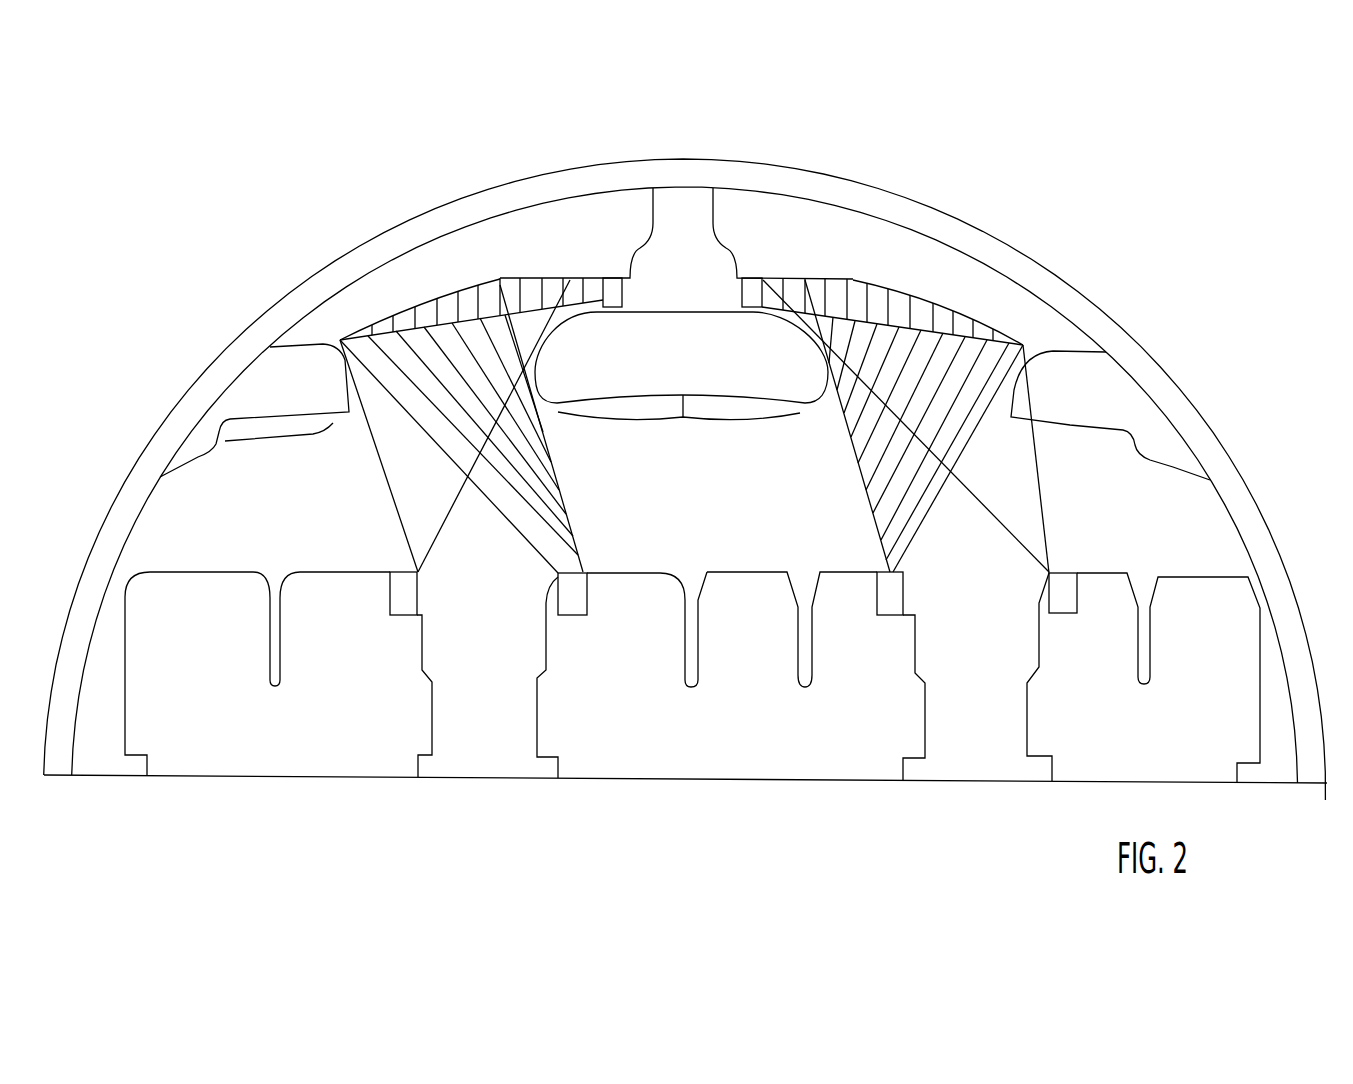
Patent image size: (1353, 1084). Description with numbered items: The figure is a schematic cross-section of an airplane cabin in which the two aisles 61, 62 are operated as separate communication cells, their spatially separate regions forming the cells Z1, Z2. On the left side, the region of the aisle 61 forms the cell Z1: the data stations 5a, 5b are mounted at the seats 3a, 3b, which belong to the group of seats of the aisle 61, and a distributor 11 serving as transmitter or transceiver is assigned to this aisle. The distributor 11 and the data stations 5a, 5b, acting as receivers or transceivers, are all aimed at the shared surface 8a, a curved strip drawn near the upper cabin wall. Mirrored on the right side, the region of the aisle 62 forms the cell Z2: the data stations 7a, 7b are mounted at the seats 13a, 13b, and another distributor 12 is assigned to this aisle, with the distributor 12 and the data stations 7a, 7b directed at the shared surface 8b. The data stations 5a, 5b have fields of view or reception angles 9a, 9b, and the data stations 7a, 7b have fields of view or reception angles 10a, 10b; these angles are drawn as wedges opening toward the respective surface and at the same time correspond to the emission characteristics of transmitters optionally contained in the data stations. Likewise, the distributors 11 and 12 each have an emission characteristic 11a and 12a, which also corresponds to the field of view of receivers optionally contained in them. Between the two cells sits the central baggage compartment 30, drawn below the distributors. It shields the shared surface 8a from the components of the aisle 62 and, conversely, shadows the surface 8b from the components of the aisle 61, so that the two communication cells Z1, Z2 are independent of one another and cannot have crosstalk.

The seat 3a is at (362, 704).
The seat 3b is at (623, 707).
The seat 13a is at (878, 708).
The seat 13b is at (1099, 707).
The data station 5a is at (405, 595).
The data station 5b is at (573, 593).
The data station 7a is at (887, 598).
The data station 7b is at (1065, 592).
The shared surface 8a is at (458, 292).
The shared surface 8b is at (930, 300).
The field of view and/or reception angle 9a is at (425, 477).
The field of view and/or reception angle 9b is at (530, 480).
The field of view and/or reception angle 10a is at (890, 517).
The field of view and/or reception angle 10b is at (1008, 497).
The distributor 11 is at (613, 290).
The emission characteristic 11a is at (568, 300).
The distributor 12 is at (753, 290).
The emission characteristic 12a is at (798, 280).
The central baggage compartment 30 is at (690, 366).
The aisle 61 is at (490, 671).
The aisle 62 is at (983, 677).
The cell Z1 is at (300, 405).
The cell Z2 is at (1055, 388).